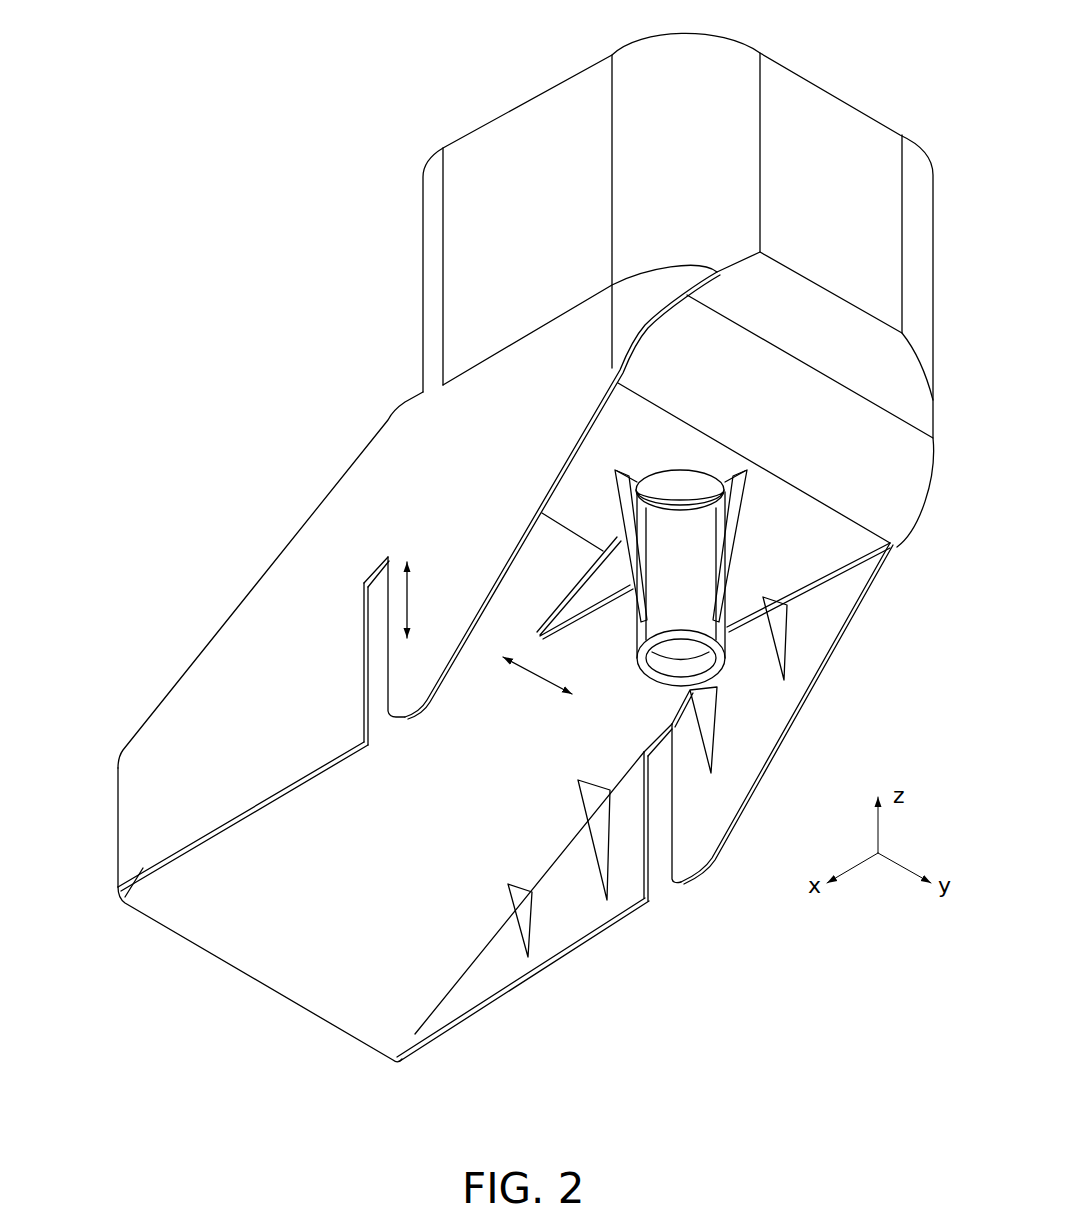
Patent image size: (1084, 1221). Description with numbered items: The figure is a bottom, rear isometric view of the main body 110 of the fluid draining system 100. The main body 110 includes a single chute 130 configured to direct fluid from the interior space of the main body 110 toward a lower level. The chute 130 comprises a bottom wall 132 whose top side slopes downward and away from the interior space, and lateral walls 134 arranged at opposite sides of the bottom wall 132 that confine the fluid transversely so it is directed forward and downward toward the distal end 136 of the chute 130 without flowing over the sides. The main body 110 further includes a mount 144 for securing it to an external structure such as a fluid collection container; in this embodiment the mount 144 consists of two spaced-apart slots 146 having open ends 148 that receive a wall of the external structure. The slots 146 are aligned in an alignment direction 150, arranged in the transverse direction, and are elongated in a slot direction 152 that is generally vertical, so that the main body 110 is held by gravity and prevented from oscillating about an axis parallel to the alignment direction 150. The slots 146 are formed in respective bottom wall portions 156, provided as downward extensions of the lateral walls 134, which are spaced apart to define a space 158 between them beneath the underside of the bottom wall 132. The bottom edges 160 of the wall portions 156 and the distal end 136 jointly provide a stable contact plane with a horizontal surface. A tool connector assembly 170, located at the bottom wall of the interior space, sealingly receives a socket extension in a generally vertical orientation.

The fluid draining system 100 is at (501, 562).
The main body 110 is at (361, 331).
The chute 130 is at (468, 681).
The bottom wall 132 is at (270, 905).
The lateral walls 134 is at (247, 637).
The distal end 136 is at (109, 861).
The mount 144 is at (343, 630).
The slots 146 is at (366, 674).
The open ends 148 is at (384, 735).
The alignment direction 150 is at (533, 683).
The slot direction 152 is at (412, 591).
The bottom wall portions 156 is at (167, 790).
The space 158 is at (432, 842).
The bottom edges 160 is at (173, 858).
The tool connector assembly 170 is at (755, 533).